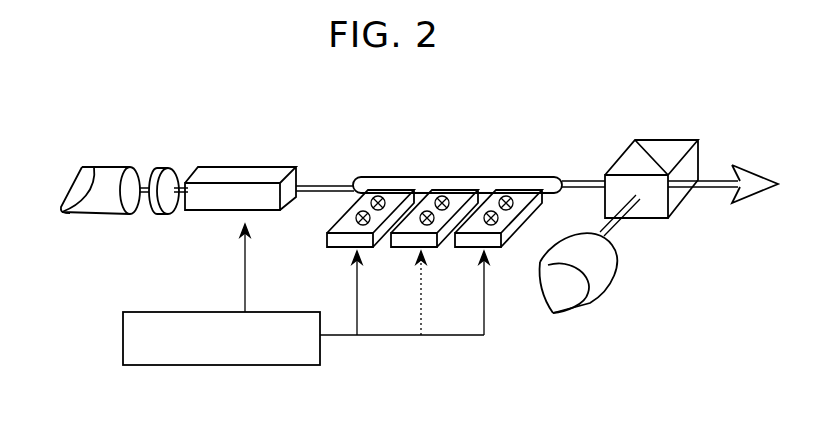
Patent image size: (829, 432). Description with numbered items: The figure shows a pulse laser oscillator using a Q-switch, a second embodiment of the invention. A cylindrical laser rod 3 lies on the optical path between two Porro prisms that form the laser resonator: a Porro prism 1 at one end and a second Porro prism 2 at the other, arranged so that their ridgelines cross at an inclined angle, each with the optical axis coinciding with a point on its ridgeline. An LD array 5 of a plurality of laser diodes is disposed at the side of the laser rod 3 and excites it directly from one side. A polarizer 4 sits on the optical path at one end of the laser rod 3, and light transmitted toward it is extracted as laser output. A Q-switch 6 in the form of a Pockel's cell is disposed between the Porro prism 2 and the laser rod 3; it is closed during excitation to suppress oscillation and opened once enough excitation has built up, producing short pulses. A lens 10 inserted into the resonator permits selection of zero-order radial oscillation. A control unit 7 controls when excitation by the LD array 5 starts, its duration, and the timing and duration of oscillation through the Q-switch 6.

The Porro prism 1 is at (598, 277).
The second Porro prism 2 is at (110, 166).
The laser rod 3 is at (460, 176).
The polarizer 4 is at (656, 143).
The LD array 5 is at (497, 250).
The Q-switch 6 is at (250, 166).
The control unit 7 is at (218, 365).
The lens 10 is at (163, 167).